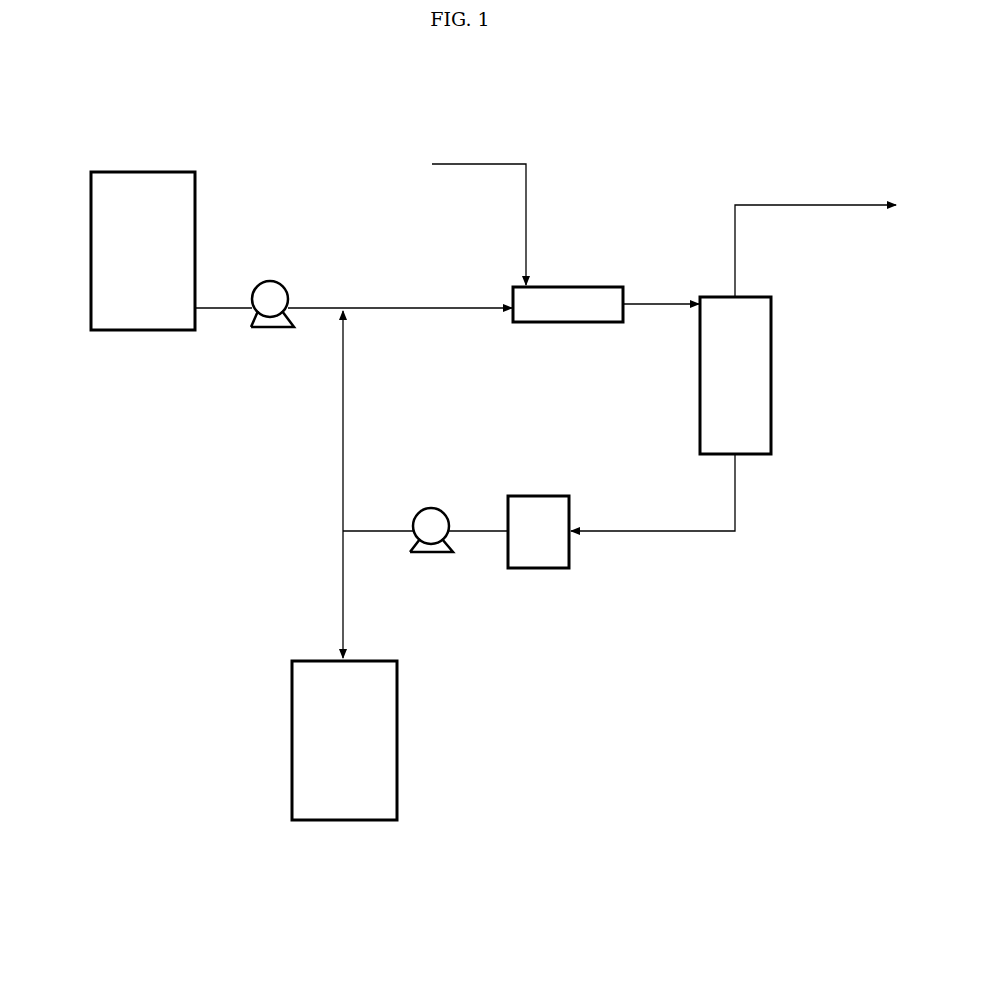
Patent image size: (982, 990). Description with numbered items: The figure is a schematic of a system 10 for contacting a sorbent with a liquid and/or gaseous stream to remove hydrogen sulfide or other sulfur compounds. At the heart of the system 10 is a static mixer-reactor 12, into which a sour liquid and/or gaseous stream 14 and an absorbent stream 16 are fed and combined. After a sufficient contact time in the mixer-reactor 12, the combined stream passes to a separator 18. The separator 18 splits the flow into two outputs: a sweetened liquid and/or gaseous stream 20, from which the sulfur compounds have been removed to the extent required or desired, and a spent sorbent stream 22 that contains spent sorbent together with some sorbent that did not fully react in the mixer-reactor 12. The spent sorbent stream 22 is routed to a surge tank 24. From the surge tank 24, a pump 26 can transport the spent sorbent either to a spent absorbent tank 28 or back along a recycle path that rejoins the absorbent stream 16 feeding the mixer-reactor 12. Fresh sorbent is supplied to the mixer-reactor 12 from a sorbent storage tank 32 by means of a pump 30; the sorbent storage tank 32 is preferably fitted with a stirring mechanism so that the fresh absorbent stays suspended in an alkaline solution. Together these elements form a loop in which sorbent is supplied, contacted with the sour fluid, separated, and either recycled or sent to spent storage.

The system 10 is at (112, 100).
The static mixer-reactor 12 is at (606, 304).
The sour liquid and/or gaseous stream 14 is at (479, 212).
The absorbent stream 16 is at (400, 296).
The separator 18 is at (735, 375).
The sweetened liquid and/or gaseous stream 20 is at (815, 239).
The spent sorbent stream 22 is at (653, 492).
The surge tank 24 is at (538, 532).
The pump 26 is at (431, 491).
The spent absorbent tank 28 is at (344, 565).
The pump 30 is at (270, 268).
The sorbent storage tank 32 is at (143, 251).